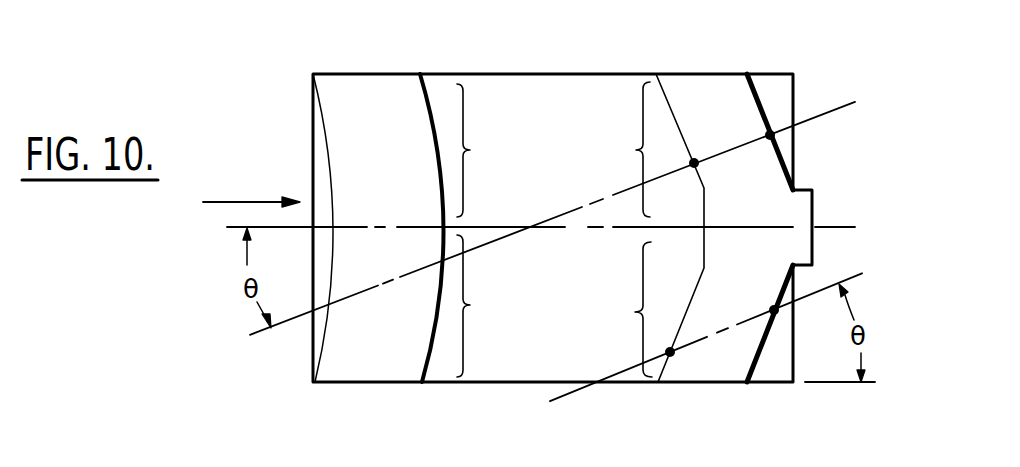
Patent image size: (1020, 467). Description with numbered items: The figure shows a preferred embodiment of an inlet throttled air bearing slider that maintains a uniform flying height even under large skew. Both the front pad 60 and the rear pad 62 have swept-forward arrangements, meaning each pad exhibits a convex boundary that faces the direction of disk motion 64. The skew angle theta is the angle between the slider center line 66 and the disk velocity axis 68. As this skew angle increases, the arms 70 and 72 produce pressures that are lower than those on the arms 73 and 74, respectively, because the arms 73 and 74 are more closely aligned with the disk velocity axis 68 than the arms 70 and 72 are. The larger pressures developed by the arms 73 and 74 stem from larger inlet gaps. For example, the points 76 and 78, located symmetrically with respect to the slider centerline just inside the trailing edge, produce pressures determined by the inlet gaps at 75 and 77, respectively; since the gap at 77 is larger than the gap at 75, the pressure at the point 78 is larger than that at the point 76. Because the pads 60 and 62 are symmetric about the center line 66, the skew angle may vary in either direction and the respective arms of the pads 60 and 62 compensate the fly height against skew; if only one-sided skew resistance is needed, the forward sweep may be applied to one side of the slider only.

The front pad 60 is at (383, 93).
The rear pad 62 is at (696, 88).
The direction of disk motion 64 is at (250, 200).
The center line 66 is at (567, 228).
The disk velocity axis 68 is at (576, 208).
The arm 70 is at (482, 150).
The arm 72 is at (624, 149).
The arm 73 is at (485, 306).
The arm 74 is at (627, 309).
The inlet gap 75 is at (700, 152).
The point 76 is at (770, 135).
The inlet gap 77 is at (676, 355).
The point 78 is at (770, 307).